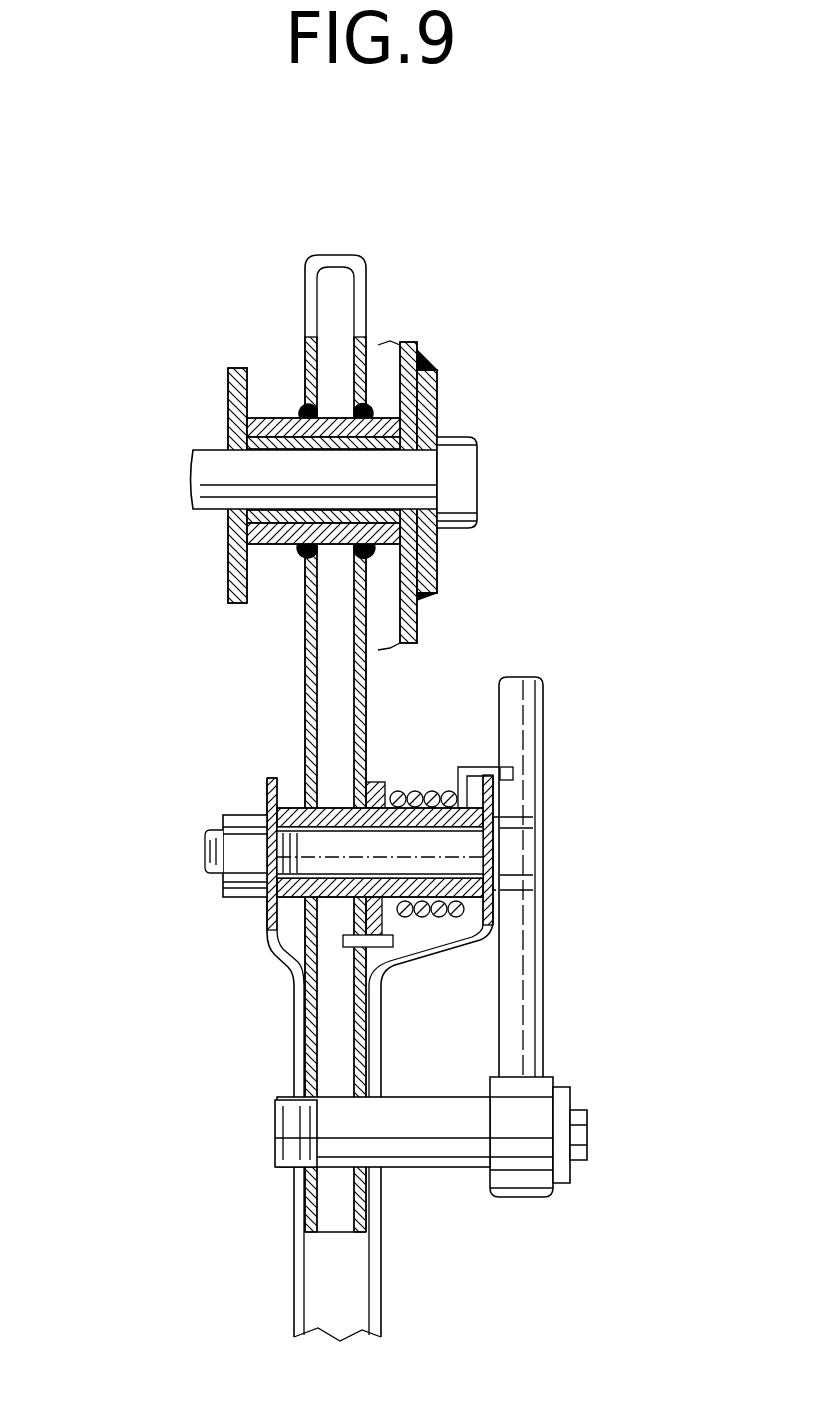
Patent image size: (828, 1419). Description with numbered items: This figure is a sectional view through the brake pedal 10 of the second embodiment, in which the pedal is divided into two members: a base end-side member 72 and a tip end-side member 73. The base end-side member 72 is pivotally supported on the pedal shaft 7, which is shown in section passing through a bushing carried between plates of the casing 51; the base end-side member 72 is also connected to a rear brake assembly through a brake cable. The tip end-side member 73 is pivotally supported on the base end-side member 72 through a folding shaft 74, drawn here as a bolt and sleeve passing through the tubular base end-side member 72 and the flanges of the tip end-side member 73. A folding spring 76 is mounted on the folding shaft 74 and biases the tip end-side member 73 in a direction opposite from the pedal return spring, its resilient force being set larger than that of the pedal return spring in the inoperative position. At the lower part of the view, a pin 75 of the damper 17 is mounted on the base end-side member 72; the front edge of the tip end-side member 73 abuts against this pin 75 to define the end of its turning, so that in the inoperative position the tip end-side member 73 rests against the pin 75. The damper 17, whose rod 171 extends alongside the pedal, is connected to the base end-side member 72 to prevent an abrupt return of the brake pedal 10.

The pedal shaft 7 is at (213, 490).
The brake pedal 10 is at (130, 728).
The damper 17 is at (548, 985).
The rod of the damper 171 is at (542, 757).
The casing 51 is at (423, 410).
The base end-side member 72 is at (303, 681).
The tip end-side member 73 is at (279, 990).
The folding shaft 74 is at (423, 873).
The pin 75 is at (423, 1163).
The folding spring 76 is at (420, 792).